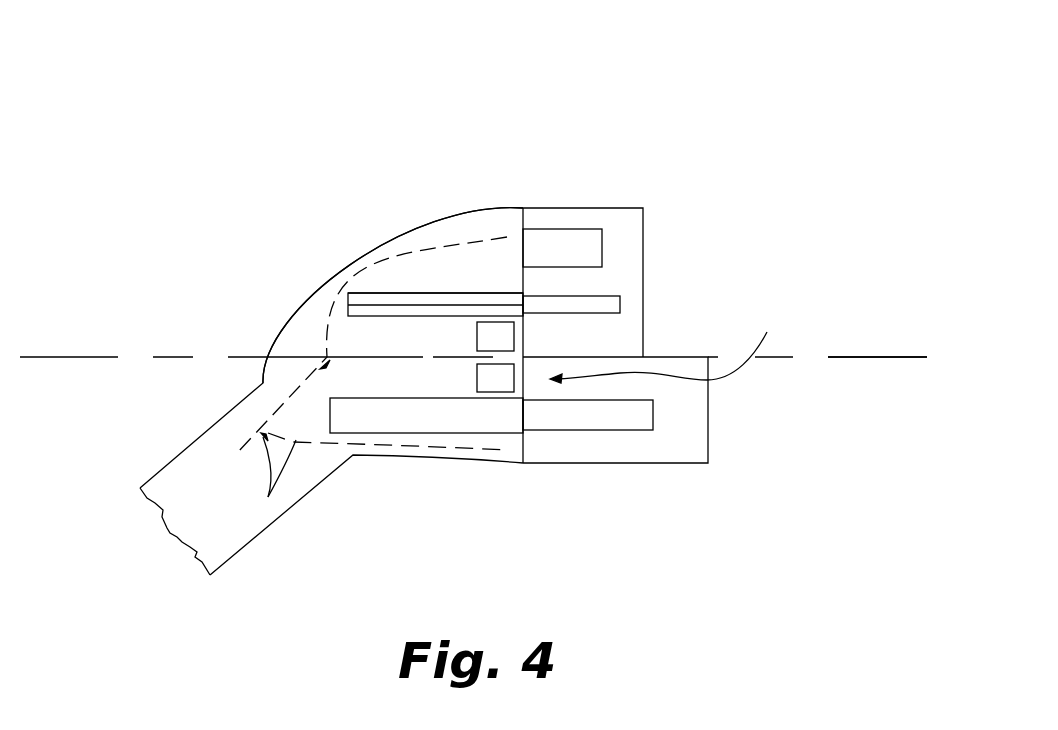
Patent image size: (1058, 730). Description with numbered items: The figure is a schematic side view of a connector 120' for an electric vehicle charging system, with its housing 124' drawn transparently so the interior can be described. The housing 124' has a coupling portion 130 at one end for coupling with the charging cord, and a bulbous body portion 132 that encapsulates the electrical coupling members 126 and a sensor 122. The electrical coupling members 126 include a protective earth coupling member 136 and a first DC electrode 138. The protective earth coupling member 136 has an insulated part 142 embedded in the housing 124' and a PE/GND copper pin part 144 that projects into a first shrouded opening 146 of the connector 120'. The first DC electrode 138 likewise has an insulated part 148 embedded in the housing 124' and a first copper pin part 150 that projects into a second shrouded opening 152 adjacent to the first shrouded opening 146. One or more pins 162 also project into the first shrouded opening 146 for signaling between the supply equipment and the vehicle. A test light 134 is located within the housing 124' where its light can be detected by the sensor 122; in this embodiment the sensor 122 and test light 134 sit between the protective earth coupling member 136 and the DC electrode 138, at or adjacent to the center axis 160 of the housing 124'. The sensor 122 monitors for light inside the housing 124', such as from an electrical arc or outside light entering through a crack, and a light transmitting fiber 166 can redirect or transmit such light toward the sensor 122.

The connector 120' is at (548, 59).
The housing 124' is at (372, 283).
The electrical coupling members 126 is at (670, 342).
The coupling portion 130 is at (178, 472).
The body portion 132 is at (380, 243).
The test light 134 is at (483, 373).
The protective earth coupling member 136 is at (495, 291).
The first DC electrode 138 is at (472, 437).
The insulated part 142 is at (360, 292).
The PE/GND copper pin part 144 is at (600, 315).
The first shrouded opening 146 is at (643, 230).
The insulated part 148 is at (365, 418).
The first copper pin part 150 is at (587, 412).
The second shrouded opening 152 is at (708, 443).
The center axis 160 is at (848, 358).
The pins 162 is at (587, 228).
The light transmitting fibers 166 is at (268, 497).
The sensor 122 is at (480, 343).